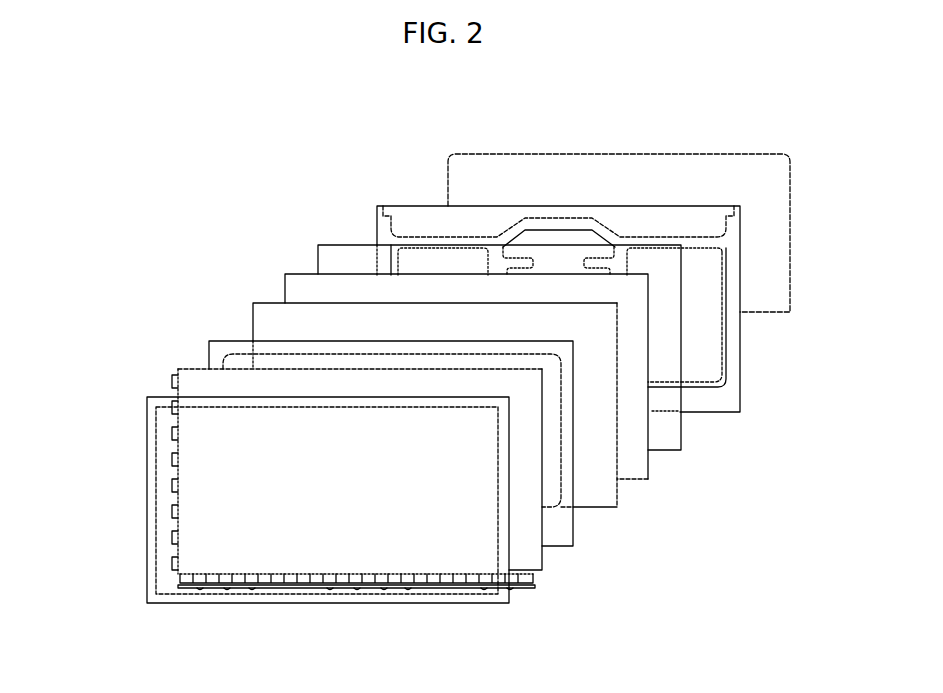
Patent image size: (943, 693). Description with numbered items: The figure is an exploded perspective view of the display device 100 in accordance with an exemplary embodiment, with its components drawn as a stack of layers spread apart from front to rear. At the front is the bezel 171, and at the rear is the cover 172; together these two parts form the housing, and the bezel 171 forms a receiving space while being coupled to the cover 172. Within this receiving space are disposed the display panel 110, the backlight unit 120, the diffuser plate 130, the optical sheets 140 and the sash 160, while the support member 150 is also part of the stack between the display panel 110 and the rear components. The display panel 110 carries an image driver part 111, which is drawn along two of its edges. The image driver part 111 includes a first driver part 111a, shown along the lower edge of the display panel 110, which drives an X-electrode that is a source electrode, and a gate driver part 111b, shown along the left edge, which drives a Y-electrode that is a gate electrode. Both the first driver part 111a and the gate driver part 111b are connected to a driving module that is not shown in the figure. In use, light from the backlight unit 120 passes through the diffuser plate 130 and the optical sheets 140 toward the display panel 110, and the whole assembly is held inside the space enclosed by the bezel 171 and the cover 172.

The display device 100 is at (399, 105).
The display panel 110 is at (537, 565).
The image driver part 111 is at (286, 482).
The first driver part 111a is at (185, 578).
The gate driver part 111b is at (171, 511).
The backlight unit 120 is at (345, 245).
The diffuser plate 130 is at (305, 274).
The optical sheets 140 is at (265, 303).
The support member 150 is at (227, 341).
The sash 160 is at (402, 206).
The bezel 171 is at (507, 599).
The cover 172 is at (773, 307).